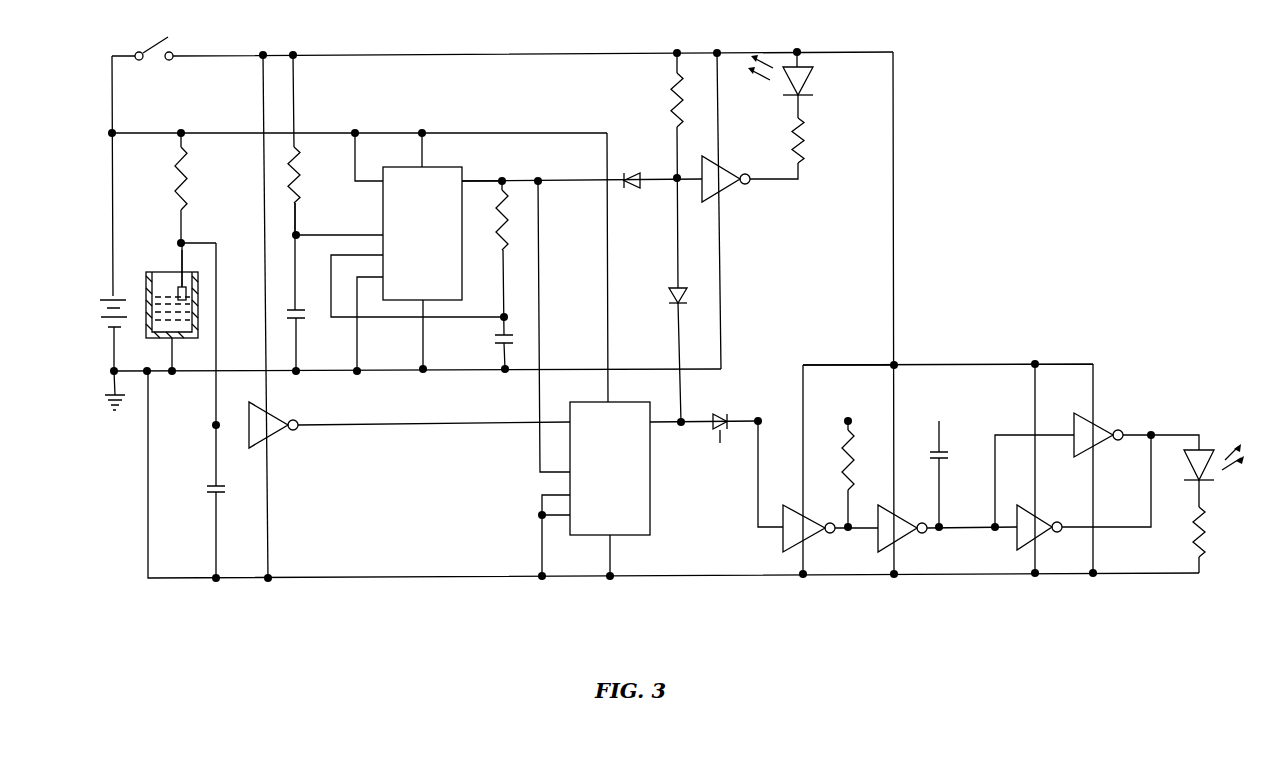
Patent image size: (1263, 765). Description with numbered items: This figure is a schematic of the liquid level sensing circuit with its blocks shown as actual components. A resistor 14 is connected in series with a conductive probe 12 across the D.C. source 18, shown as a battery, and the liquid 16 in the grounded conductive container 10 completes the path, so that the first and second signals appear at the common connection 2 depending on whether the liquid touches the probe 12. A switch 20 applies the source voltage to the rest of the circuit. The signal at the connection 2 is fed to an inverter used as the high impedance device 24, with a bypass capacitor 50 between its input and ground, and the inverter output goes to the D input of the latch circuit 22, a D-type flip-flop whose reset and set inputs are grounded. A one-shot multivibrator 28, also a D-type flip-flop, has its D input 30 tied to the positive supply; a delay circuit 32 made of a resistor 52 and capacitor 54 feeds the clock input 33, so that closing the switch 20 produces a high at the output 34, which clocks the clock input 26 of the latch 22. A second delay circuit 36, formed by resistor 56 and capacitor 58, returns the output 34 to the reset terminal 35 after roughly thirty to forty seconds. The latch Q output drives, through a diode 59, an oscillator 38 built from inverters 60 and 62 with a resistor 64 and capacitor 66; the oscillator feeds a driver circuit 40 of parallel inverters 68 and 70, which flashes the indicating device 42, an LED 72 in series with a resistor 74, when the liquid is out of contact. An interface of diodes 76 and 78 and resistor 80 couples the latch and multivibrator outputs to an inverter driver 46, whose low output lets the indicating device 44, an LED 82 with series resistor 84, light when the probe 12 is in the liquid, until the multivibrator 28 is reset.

The common connection 2 is at (184, 243).
The container 10 is at (158, 312).
The conductive probe 12 is at (180, 265).
The resistor 14 is at (190, 168).
The liquid 16 is at (157, 297).
The D.C. source 18 is at (112, 300).
The switch 20 is at (160, 42).
The latch circuit 22 is at (653, 508).
The high impedance device 24 is at (278, 442).
The clock input 26 is at (566, 478).
The one-shot multivibrator 28 is at (463, 170).
The input 30 is at (379, 178).
The delay circuit 32 is at (310, 208).
The clock input 33 is at (383, 234).
The reset terminal 35 is at (372, 257).
The output 34 is at (462, 183).
The delay circuit 36 is at (466, 376).
The oscillator 38 is at (881, 502).
The driver circuit 40 is at (1067, 513).
The indicating device 42 is at (1201, 486).
The indicating device 44 is at (807, 121).
The driver circuit 46 is at (730, 192).
The bypass capacitor 50 is at (216, 486).
The resistor 52 is at (297, 176).
The capacitor 54 is at (303, 332).
The resistor 56 is at (506, 250).
The capacitor 58 is at (500, 344).
The diode 59 is at (715, 443).
The inverter 60 is at (812, 535).
The inverter 62 is at (905, 536).
The resistor 64 is at (853, 468).
The capacitor 66 is at (942, 452).
The inverter 68 is at (1043, 517).
The inverter 70 is at (1102, 422).
The light emitting diode 72 is at (1208, 448).
The resistor 74 is at (1192, 540).
The diode 76 is at (672, 291).
The diode 78 is at (633, 190).
The resistor 80 is at (674, 92).
The LED 82 is at (814, 77).
The resistor 84 is at (805, 153).